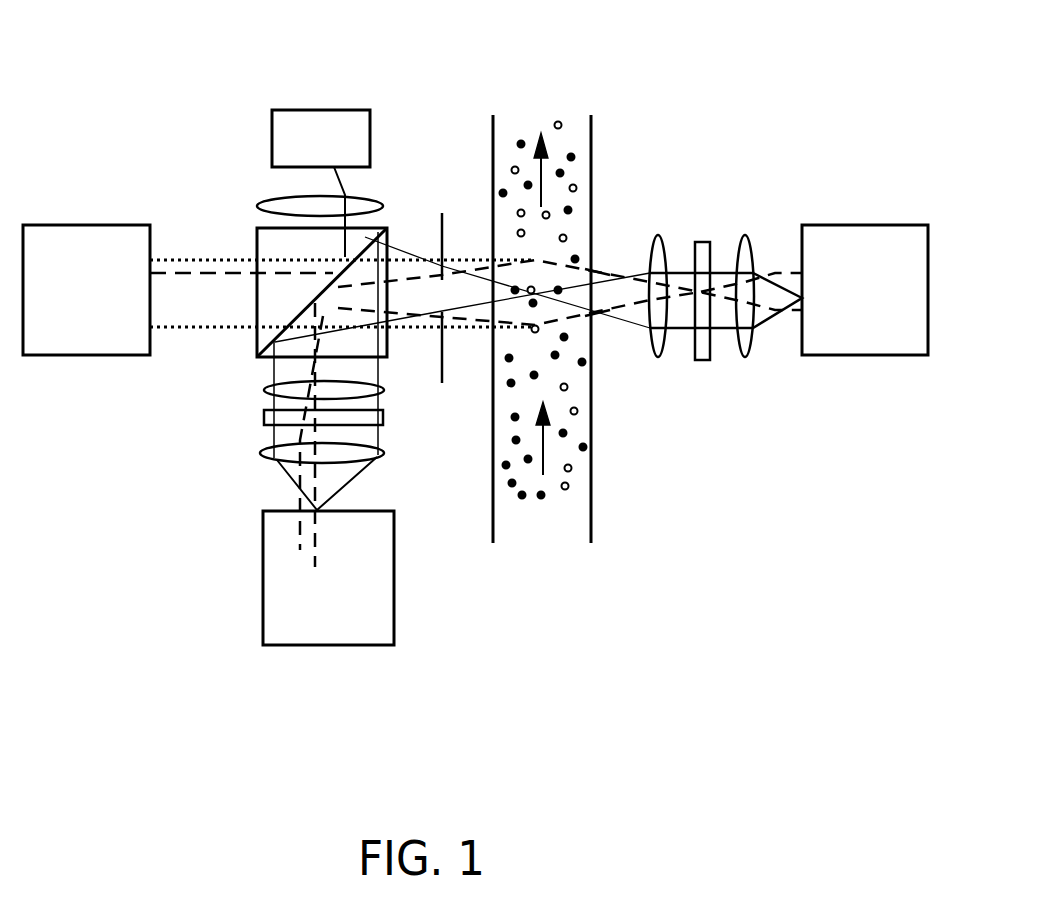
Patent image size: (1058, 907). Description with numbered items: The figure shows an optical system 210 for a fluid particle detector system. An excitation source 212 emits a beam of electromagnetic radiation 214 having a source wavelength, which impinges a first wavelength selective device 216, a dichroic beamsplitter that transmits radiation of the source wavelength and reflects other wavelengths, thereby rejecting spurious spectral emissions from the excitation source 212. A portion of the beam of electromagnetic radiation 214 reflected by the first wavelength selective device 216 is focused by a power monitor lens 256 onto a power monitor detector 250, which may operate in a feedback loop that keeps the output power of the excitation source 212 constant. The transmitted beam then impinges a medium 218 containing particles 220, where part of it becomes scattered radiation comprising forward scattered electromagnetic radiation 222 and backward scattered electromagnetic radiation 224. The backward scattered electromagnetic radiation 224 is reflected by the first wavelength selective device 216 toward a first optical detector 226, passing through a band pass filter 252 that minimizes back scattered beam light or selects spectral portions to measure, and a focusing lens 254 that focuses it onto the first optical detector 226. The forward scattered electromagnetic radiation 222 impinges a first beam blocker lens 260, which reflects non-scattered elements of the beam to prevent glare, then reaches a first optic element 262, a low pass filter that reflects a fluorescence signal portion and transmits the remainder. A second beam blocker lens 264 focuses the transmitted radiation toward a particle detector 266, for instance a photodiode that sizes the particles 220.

The optical system 210 is at (728, 96).
The excitation source 212 is at (98, 225).
The beam of electromagnetic radiation 214 is at (199, 257).
The first wavelength selective device 216 is at (387, 228).
The medium 218 is at (591, 168).
The particles 220 is at (577, 259).
The forward scattered electromagnetic radiation 222 is at (602, 273).
The backward scattered electromagnetic radiation 224 is at (422, 309).
The first optical detector 226 is at (262, 582).
The power monitor detector 250 is at (332, 108).
The band pass filter 252 is at (265, 418).
The focusing lens 254 is at (260, 455).
The power monitor lens 256 is at (272, 198).
The first beam blocker lens 260 is at (660, 355).
The first optic element 262 is at (704, 360).
The second beam blocker lens 264 is at (748, 357).
The particle detector 266 is at (830, 355).